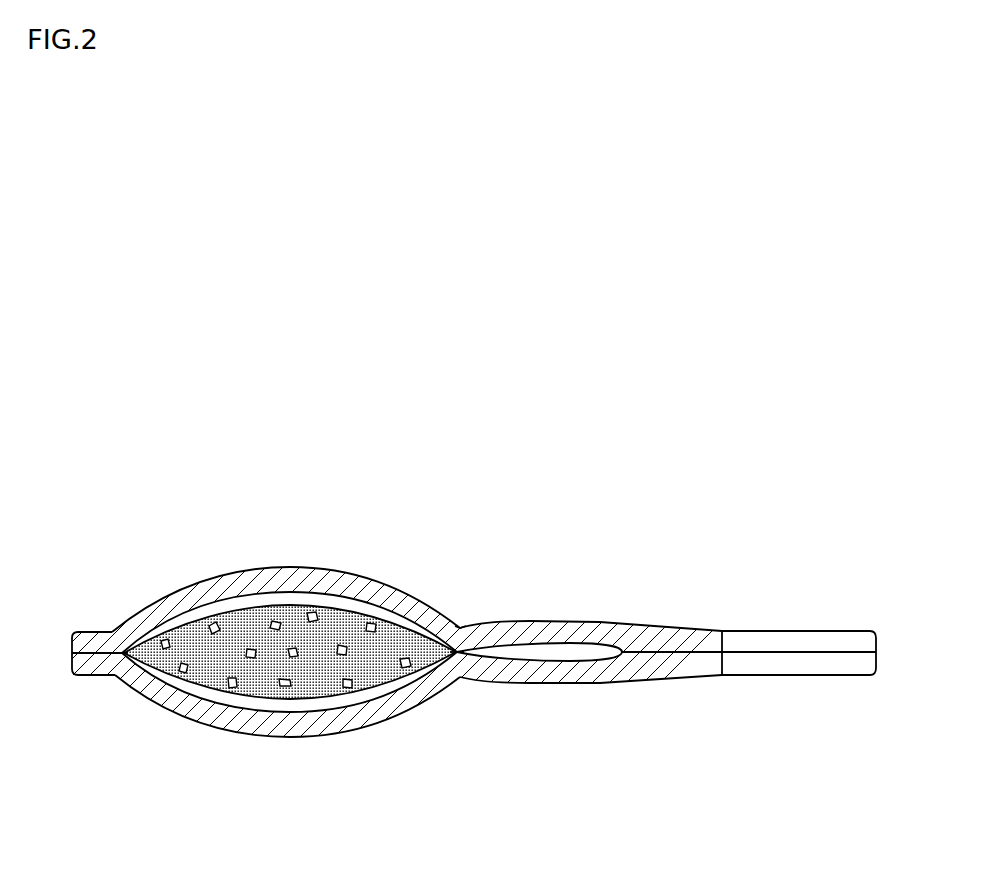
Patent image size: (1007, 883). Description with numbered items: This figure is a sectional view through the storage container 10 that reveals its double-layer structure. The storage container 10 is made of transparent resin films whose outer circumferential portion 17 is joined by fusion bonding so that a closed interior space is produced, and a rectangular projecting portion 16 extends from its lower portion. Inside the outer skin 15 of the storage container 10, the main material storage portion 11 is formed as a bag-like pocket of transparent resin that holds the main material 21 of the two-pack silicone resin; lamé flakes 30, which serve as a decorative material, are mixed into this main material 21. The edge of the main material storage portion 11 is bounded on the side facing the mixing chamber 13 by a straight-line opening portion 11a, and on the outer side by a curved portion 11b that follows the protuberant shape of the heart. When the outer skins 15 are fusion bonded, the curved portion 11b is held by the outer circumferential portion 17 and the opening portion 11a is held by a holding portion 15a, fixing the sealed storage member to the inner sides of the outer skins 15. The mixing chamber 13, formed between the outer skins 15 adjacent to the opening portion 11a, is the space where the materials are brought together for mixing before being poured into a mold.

The storage container 10 is at (209, 546).
The main material storage portion 11 is at (323, 604).
The opening portion 11a is at (459, 651).
The curved portion 11b is at (121, 651).
The mixing chamber 13 is at (552, 653).
The outer skin 15 is at (368, 585).
The holding portion 15a is at (458, 627).
The projecting portion 16 is at (787, 652).
The outer circumferential portion 17 is at (92, 677).
The main material 21 is at (319, 690).
The lamé flakes 30 is at (283, 687).